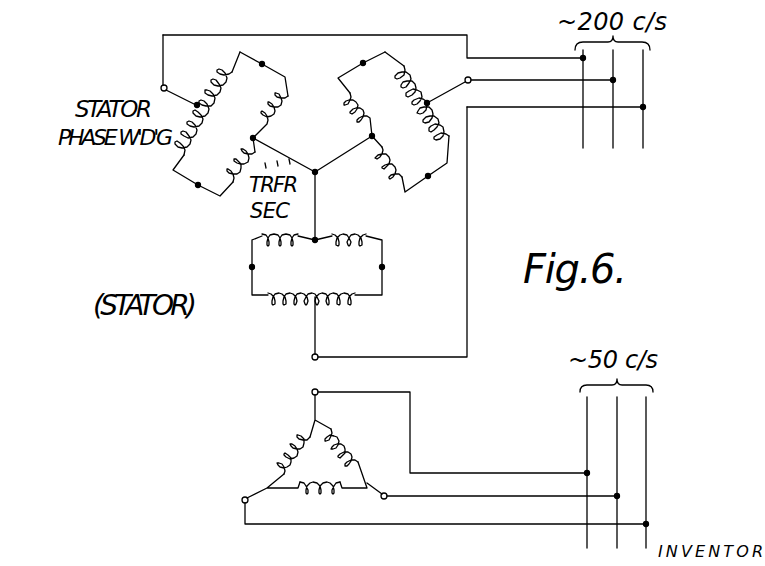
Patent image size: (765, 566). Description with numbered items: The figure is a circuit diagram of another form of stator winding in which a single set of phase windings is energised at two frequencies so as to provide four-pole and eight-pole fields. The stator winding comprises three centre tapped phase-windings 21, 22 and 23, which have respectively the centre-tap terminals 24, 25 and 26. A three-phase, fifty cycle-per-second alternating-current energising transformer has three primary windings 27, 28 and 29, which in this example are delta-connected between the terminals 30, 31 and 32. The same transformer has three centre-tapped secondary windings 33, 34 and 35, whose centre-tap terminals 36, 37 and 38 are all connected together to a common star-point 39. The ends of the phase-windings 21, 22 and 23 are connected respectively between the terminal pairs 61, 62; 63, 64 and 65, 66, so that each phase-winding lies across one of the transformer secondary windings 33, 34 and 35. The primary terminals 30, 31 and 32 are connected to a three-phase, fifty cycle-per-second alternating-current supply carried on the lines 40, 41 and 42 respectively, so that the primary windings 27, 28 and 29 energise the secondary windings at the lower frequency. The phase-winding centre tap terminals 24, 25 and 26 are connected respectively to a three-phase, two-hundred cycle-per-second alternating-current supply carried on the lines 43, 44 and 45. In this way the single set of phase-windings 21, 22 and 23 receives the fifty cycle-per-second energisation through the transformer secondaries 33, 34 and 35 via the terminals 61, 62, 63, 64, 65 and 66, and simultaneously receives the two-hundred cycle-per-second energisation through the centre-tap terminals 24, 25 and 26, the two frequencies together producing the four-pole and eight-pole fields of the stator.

The centre tapped phase-winding 21 is at (211, 78).
The centre tapped phase-winding 22 is at (414, 82).
The centre tapped phase-winding 23 is at (347, 303).
The centre-tap terminal 24 is at (161, 87).
The centre-tap terminal 25 is at (480, 84).
The centre-tap terminal 26 is at (312, 357).
The primary winding 27 is at (288, 446).
The primary winding 28 is at (342, 458).
The primary winding 29 is at (336, 498).
The primary terminal 30 is at (312, 392).
The primary terminal 31 is at (385, 493).
The primary terminal 32 is at (242, 500).
The centre-tapped secondary winding 33 is at (257, 119).
The centre-tapped secondary winding 34 is at (369, 118).
The centre-tapped secondary winding 35 is at (347, 245).
The centre-tap terminal 36 is at (256, 138).
The centre-tap terminal 37 is at (370, 136).
The centre-tap terminal 38 is at (317, 237).
The star-point 39 is at (317, 173).
The supply line 40 is at (586, 440).
The supply line 41 is at (617, 424).
The supply line 42 is at (646, 430).
The supply line 43 is at (583, 144).
The supply line 44 is at (613, 146).
The supply line 45 is at (643, 146).
The terminal 61 is at (197, 187).
The terminal 62 is at (264, 65).
The terminal 63 is at (361, 63).
The terminal 64 is at (429, 178).
The terminal 65 is at (384, 267).
The terminal 66 is at (250, 267).